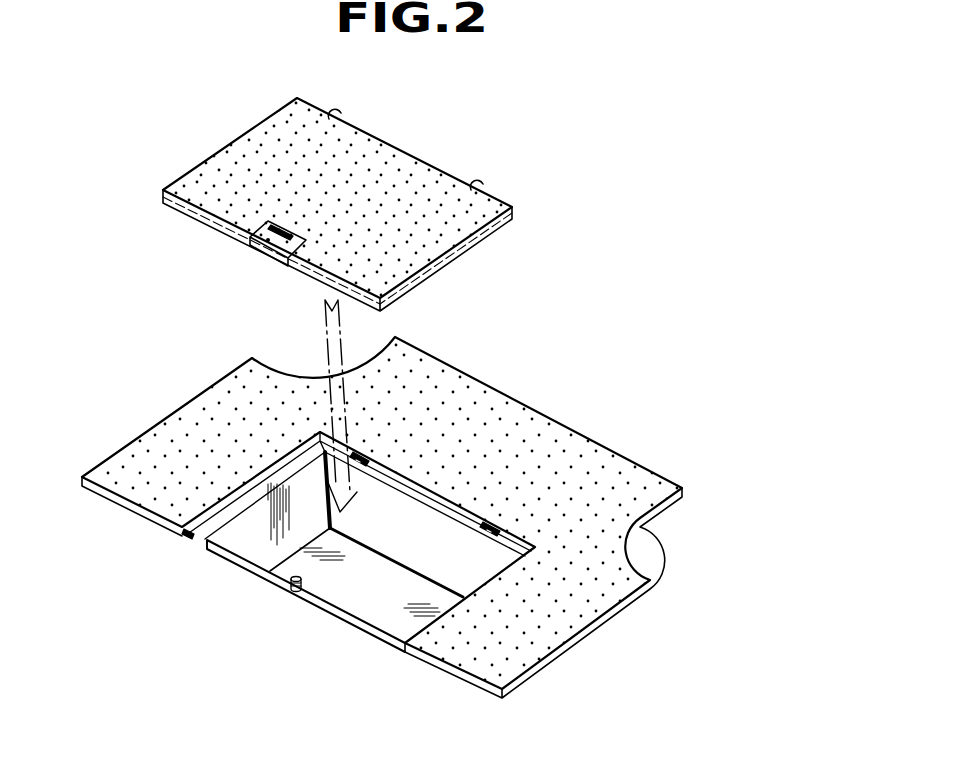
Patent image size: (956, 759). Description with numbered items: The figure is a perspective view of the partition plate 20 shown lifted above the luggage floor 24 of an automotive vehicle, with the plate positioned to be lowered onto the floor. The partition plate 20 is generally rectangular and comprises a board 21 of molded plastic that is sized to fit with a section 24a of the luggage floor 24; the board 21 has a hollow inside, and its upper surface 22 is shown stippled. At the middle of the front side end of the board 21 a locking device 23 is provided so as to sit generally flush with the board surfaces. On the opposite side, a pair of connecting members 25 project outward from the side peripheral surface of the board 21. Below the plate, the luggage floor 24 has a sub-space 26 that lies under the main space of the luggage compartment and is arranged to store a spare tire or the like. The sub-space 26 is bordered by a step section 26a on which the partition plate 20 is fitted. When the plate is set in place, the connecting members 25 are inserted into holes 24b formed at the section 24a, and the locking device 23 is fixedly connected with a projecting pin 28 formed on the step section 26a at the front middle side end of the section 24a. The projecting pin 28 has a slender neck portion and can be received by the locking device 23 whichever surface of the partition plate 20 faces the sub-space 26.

The partition plate 20 is at (360, 188).
The board 21 is at (455, 265).
The lid surface layer 22 is at (388, 177).
The locking device 23 is at (250, 246).
The luggage floor 24 is at (490, 463).
The section of the luggage floor 24a is at (188, 533).
The holes 24b is at (367, 474).
The connecting members 25 is at (337, 113).
The sub-space 26 is at (383, 587).
The step section 26a is at (208, 548).
The projecting pin 28 is at (294, 592).